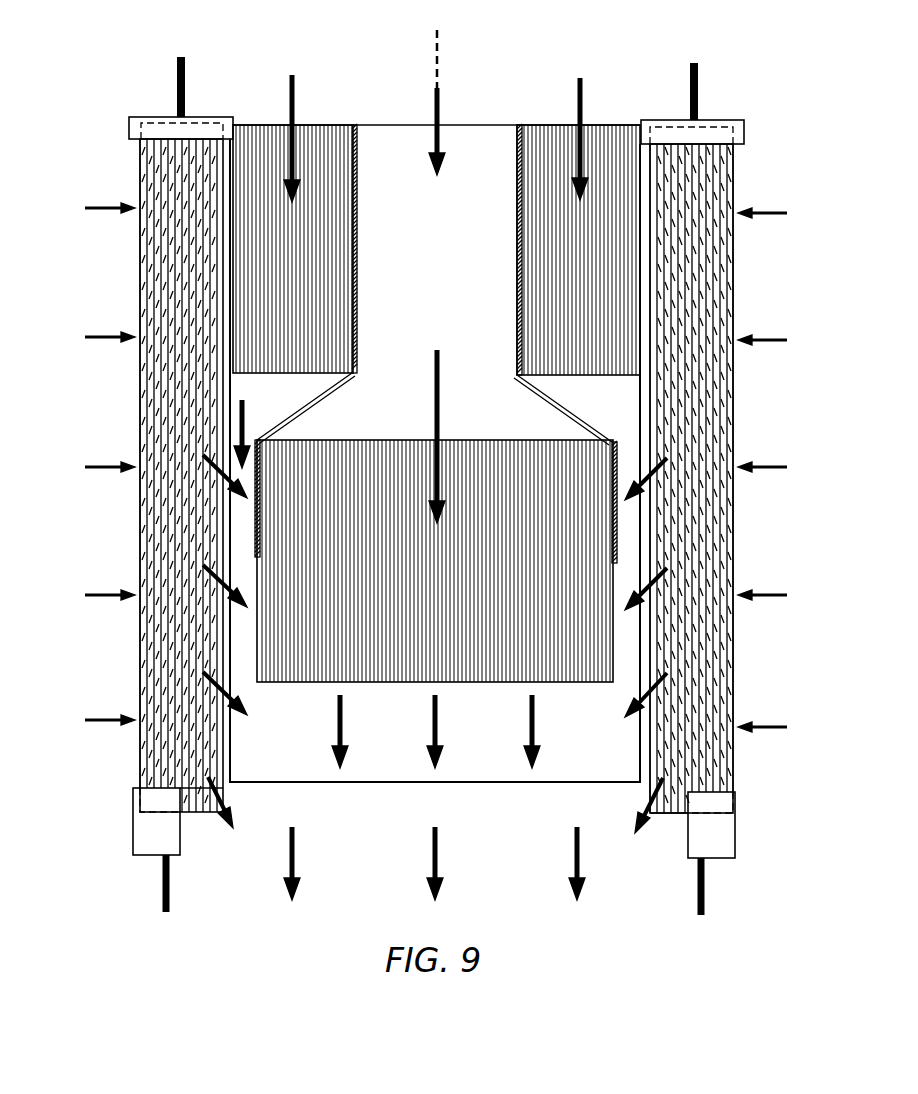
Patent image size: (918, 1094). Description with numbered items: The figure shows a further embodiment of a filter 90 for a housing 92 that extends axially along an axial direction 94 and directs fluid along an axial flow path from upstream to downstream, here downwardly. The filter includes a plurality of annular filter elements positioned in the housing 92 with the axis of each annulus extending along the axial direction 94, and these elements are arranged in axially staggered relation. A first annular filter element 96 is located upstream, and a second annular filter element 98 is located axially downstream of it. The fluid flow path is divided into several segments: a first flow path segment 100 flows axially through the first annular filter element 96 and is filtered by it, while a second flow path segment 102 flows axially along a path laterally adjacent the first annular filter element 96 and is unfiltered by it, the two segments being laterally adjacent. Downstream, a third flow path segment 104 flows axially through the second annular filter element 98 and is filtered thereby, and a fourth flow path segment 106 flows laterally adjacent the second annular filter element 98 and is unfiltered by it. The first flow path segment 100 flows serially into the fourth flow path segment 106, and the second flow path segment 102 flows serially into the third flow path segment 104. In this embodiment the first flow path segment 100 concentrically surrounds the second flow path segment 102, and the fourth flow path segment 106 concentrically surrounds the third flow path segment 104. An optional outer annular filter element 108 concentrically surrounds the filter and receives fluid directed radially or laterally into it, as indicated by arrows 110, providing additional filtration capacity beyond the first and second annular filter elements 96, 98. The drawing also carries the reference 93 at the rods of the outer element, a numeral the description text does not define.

The filter 90 is at (126, 93).
The housing 92 is at (227, 166).
The electrodes / terminal rods 93 is at (697, 73).
The axial direction 94 is at (437, 55).
The first annular filter element 96 is at (330, 225).
The second annular filter element 98 is at (305, 660).
The first flow path segment 100 is at (292, 97).
The second flow path segment 102 is at (437, 110).
The third flow path segment 104 is at (437, 417).
The fourth flow path segment 106 is at (245, 415).
The outer annular filter element 108 is at (155, 277).
The arrows 110 is at (103, 470).